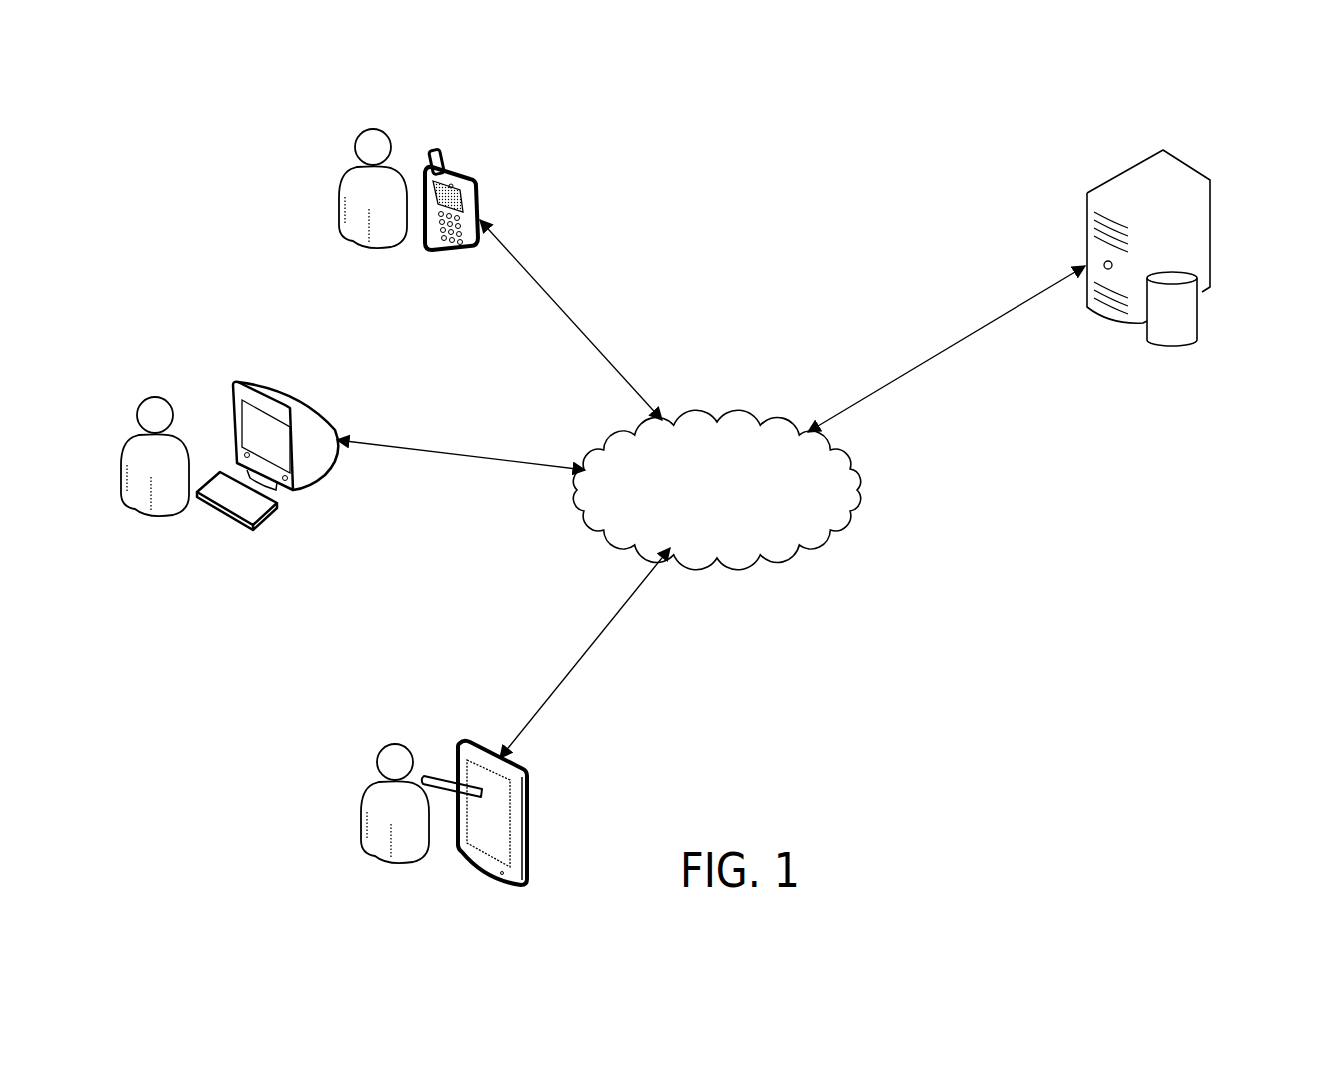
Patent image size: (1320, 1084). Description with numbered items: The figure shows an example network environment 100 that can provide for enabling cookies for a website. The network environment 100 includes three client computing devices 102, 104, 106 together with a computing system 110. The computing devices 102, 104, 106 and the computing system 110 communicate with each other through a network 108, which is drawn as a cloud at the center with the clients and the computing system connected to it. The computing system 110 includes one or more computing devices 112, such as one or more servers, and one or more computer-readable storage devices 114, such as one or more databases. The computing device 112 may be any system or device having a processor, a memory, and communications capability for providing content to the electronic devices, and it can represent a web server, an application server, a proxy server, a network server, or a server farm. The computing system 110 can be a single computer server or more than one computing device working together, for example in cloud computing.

The network environment 100 is at (842, 170).
The computing device 102 is at (466, 176).
The computing device 104 is at (308, 400).
The computing device 106 is at (525, 772).
The network 108 is at (719, 420).
The computing system 110 is at (1090, 340).
The computing device 112 is at (1191, 166).
The computer-readable storage device 114 is at (1186, 344).